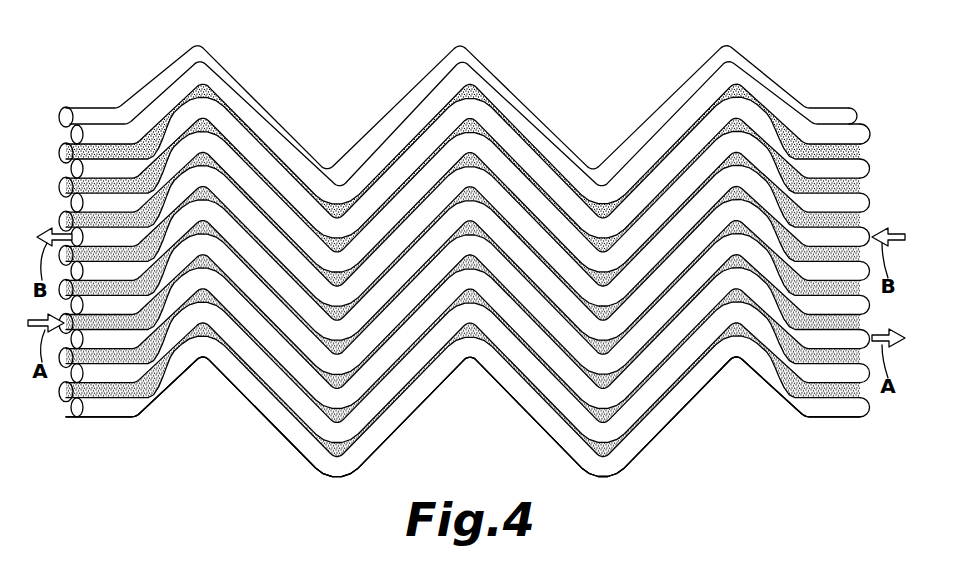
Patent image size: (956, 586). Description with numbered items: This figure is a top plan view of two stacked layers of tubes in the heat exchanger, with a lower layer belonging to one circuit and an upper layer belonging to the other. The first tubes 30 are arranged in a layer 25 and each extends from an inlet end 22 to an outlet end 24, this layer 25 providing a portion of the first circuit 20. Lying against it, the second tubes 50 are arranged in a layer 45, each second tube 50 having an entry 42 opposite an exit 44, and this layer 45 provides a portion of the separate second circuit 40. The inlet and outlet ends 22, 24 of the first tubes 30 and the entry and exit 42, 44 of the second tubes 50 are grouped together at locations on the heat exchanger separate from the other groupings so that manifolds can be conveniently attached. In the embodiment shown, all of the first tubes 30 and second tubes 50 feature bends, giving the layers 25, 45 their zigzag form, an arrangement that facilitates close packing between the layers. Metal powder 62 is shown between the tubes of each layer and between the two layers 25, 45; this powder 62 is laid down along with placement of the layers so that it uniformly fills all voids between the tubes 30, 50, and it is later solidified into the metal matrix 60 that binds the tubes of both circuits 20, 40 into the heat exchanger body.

The first circuit 20 is at (447, 254).
The inlet end 22 is at (77, 108).
The outlet end 24 is at (842, 110).
The layer of first tubes 25 is at (366, 106).
The first tube 30 is at (163, 80).
The second circuit 40 is at (187, 402).
The entry 42 is at (840, 413).
The exit 44 is at (95, 413).
The layer of second tubes 45 is at (440, 414).
The second tube 50 is at (292, 428).
The metal matrix 60 is at (120, 402).
The metal powder 62 is at (115, 146).